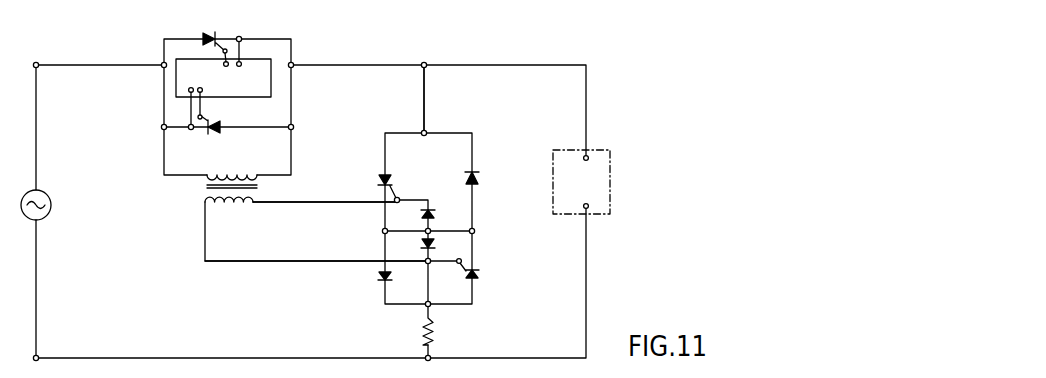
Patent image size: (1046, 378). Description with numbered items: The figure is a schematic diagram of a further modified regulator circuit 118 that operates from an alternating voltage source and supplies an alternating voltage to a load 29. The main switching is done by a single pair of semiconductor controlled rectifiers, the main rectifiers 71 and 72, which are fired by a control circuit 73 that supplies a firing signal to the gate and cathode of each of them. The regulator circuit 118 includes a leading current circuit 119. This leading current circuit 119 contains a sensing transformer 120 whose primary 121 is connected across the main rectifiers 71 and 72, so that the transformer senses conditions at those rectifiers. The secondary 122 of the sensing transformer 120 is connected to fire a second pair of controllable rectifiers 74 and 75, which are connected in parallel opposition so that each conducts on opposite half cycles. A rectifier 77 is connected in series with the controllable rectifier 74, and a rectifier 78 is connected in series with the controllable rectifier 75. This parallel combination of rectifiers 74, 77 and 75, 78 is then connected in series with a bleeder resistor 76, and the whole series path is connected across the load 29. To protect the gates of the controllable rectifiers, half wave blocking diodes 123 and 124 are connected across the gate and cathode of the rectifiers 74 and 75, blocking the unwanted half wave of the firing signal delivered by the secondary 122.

The load 29 is at (610, 203).
The main rectifier 71 is at (218, 10).
The main rectifier 72 is at (211, 135).
The control circuit 73 is at (239, 98).
The controllable rectifier 74 is at (380, 178).
The controllable rectifier 75 is at (481, 272).
The bleeder resistor 76 is at (436, 333).
The rectifier 77 is at (377, 280).
The rectifier 78 is at (479, 183).
The regulator circuit 118 is at (366, 103).
The leading current circuit 119 is at (353, 234).
The sensing transformer 120 is at (213, 182).
The primary 121 is at (234, 172).
The secondary 122 is at (235, 208).
The half wave blocking diode 123 is at (437, 214).
The half wave blocking diode 124 is at (419, 242).